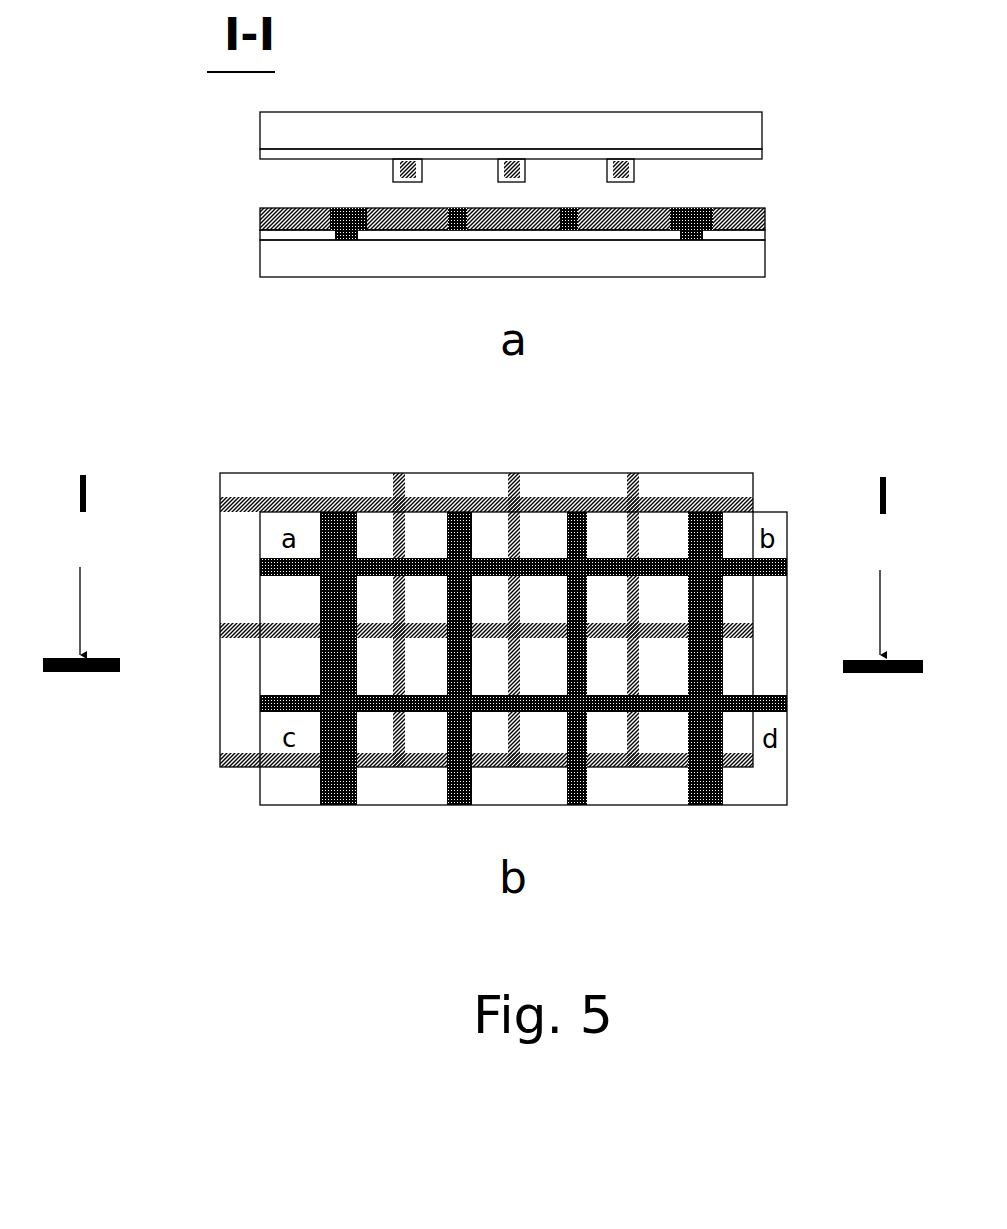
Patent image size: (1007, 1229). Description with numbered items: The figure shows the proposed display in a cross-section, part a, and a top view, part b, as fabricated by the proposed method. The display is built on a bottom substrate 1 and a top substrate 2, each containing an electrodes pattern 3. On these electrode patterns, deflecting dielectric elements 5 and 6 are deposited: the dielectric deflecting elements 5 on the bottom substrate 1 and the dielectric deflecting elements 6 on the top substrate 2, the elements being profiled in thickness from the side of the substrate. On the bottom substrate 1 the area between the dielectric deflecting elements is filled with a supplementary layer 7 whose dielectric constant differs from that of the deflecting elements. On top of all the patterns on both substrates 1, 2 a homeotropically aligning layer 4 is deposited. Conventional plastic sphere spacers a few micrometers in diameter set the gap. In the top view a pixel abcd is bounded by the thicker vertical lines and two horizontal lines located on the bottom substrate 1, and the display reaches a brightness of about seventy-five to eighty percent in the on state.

The bottom substrate 1 is at (270, 258).
The top substrate 2 is at (278, 133).
The electrodes pattern 3 is at (762, 153).
The homeotropically aligning layer 4 is at (283, 159).
The dielectric deflecting element 5 is at (705, 237).
The dielectric deflecting element 6 is at (417, 163).
The supplementary layer 7 is at (405, 222).